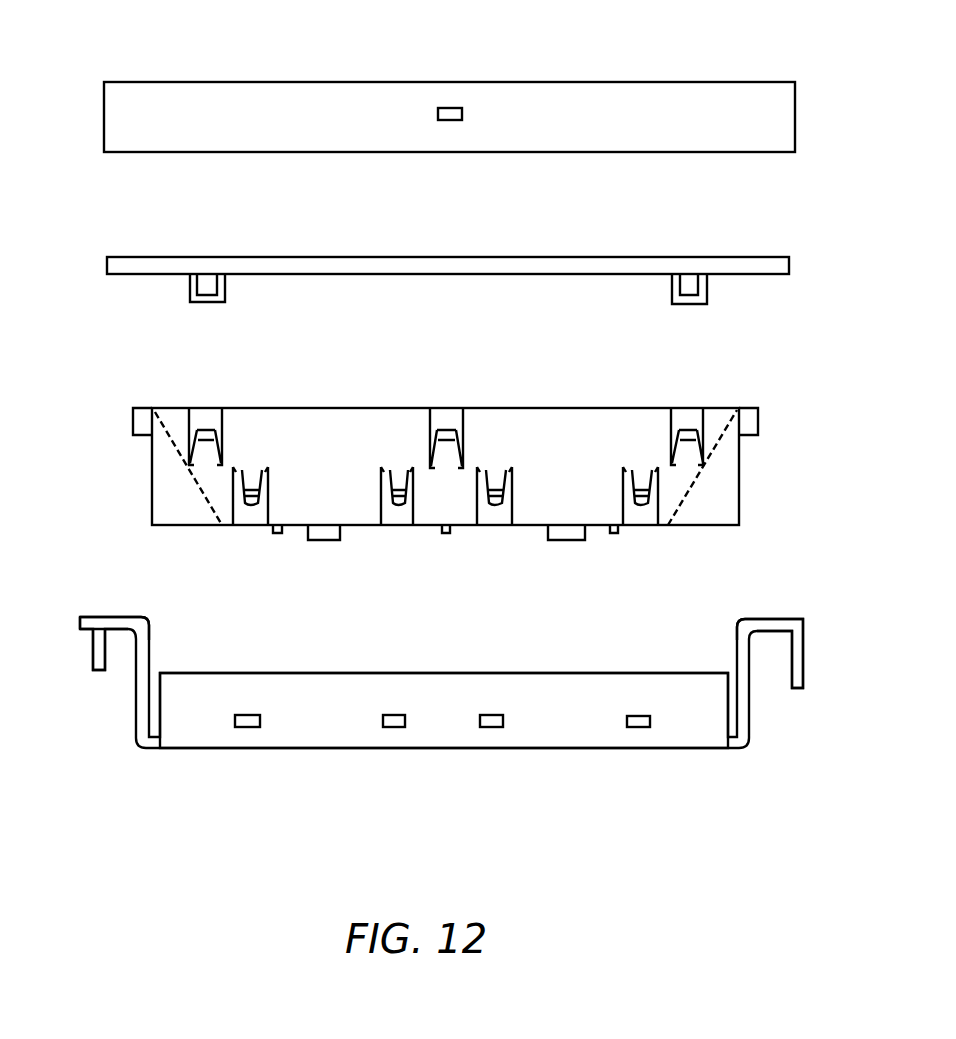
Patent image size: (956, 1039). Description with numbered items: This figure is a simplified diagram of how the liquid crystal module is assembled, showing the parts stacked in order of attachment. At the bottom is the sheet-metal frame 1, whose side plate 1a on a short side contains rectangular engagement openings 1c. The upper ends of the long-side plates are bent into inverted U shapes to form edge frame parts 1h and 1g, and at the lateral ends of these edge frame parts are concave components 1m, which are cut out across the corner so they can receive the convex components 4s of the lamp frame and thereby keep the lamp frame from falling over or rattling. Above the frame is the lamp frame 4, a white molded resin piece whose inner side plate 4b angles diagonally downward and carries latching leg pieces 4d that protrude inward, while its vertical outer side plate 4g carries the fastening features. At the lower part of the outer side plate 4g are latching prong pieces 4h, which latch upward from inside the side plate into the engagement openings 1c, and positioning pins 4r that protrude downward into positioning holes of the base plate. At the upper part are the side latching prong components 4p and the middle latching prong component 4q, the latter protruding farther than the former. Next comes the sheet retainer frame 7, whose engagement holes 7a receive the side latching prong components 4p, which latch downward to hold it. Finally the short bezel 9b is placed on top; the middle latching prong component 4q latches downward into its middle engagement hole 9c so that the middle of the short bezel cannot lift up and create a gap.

The frame 1 is at (301, 769).
The left side plate 1a is at (440, 686).
The engagement openings 1c is at (394, 728).
The edge frame part 1g is at (775, 621).
The edge frame part 1h is at (113, 621).
The concave components 1m is at (142, 647).
The lamp frame 4 is at (562, 408).
The inner side plate 4b is at (687, 497).
The latching leg pieces 4d is at (320, 542).
The outer side plate 4g is at (558, 502).
The latching prong pieces 4h is at (395, 503).
The side latching prong components 4p is at (205, 432).
The middle latching prong component 4q is at (447, 432).
The positioning pins 4r is at (278, 535).
The convex components 4s is at (143, 412).
The sheet retainer frame 7 is at (457, 257).
The engagement holes 7a is at (205, 283).
The short bezel 9b is at (616, 97).
The middle engagement hole 9c is at (451, 108).